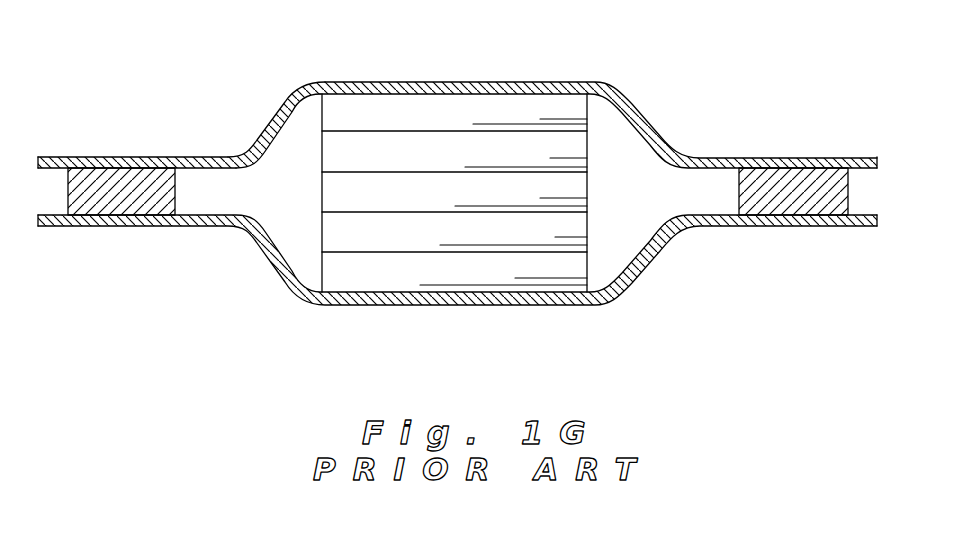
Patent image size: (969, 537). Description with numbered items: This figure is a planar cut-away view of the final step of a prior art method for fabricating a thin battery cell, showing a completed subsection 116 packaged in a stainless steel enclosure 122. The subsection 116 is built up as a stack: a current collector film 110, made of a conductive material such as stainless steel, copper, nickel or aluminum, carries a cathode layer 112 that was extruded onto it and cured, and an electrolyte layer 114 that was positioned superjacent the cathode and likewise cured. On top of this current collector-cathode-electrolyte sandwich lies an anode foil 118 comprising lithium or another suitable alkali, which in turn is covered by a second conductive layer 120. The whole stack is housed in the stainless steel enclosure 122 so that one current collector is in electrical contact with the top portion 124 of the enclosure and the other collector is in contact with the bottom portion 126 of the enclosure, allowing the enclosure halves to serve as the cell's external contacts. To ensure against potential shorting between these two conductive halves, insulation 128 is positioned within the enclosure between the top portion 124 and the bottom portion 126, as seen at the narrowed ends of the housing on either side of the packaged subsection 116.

The current collector film 110 is at (425, 113).
The cathode layer 112 is at (345, 152).
The electrolyte layer 114 is at (562, 185).
The subsection 116 is at (300, 233).
The anode foil 118 is at (570, 224).
The second conductive layer 120 is at (382, 270).
The stainless steel enclosure 122 is at (325, 80).
The top portion of the stainless steel enclosure 124 is at (470, 80).
The bottom portion of the enclosure 126 is at (561, 308).
The insulation 128 is at (127, 193).